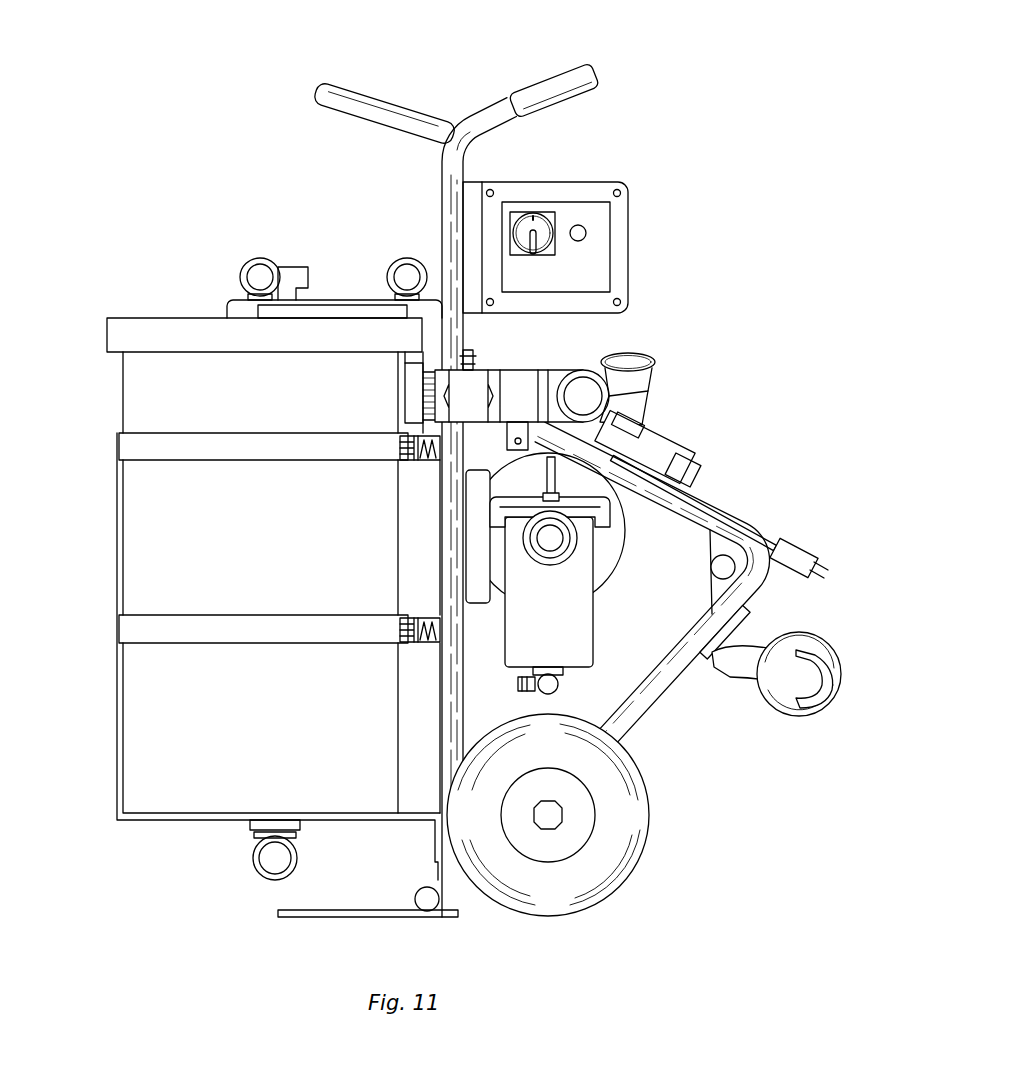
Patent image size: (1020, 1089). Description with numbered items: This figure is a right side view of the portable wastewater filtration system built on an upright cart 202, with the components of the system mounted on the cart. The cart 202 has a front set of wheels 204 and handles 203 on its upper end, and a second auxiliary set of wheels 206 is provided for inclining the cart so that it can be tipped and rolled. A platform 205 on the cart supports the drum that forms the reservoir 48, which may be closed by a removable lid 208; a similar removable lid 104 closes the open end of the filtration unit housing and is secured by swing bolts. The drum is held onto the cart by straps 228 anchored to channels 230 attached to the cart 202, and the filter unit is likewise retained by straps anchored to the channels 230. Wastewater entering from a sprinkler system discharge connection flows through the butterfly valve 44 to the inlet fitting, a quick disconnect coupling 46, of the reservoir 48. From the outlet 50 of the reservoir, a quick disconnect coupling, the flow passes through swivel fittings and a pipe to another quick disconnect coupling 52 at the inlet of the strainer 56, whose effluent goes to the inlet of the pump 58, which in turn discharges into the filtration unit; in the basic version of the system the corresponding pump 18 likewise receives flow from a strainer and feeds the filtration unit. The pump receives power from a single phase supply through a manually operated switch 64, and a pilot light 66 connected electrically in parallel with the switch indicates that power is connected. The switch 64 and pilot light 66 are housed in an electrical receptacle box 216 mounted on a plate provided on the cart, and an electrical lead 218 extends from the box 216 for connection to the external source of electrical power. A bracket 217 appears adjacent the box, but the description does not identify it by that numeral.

The upright cart 202 is at (430, 192).
The handles 203 is at (574, 73).
The mounting bracket 217 is at (473, 185).
The electrical receptacle box 216 is at (632, 273).
The manually operated switch 64 is at (553, 232).
The pilot light 66 is at (588, 234).
The removable lid 208 is at (145, 318).
The removable lid 104 is at (347, 300).
The reservoir 48 is at (122, 395).
The straps 228 is at (178, 456).
The channels 230 is at (425, 458).
The butterfly valve 44 is at (462, 508).
The pump 18 is at (457, 563).
The strainer 56 is at (600, 650).
The quick disconnect coupling 52 is at (576, 556).
The quick disconnect coupling 46 is at (490, 365).
The pump 58 is at (652, 486).
The electrical lead 218 is at (798, 545).
The auxiliary set of wheels 206 is at (802, 714).
The front set of wheels 204 is at (622, 868).
The quick disconnect coupling 50 is at (262, 862).
The platform 205 is at (325, 918).